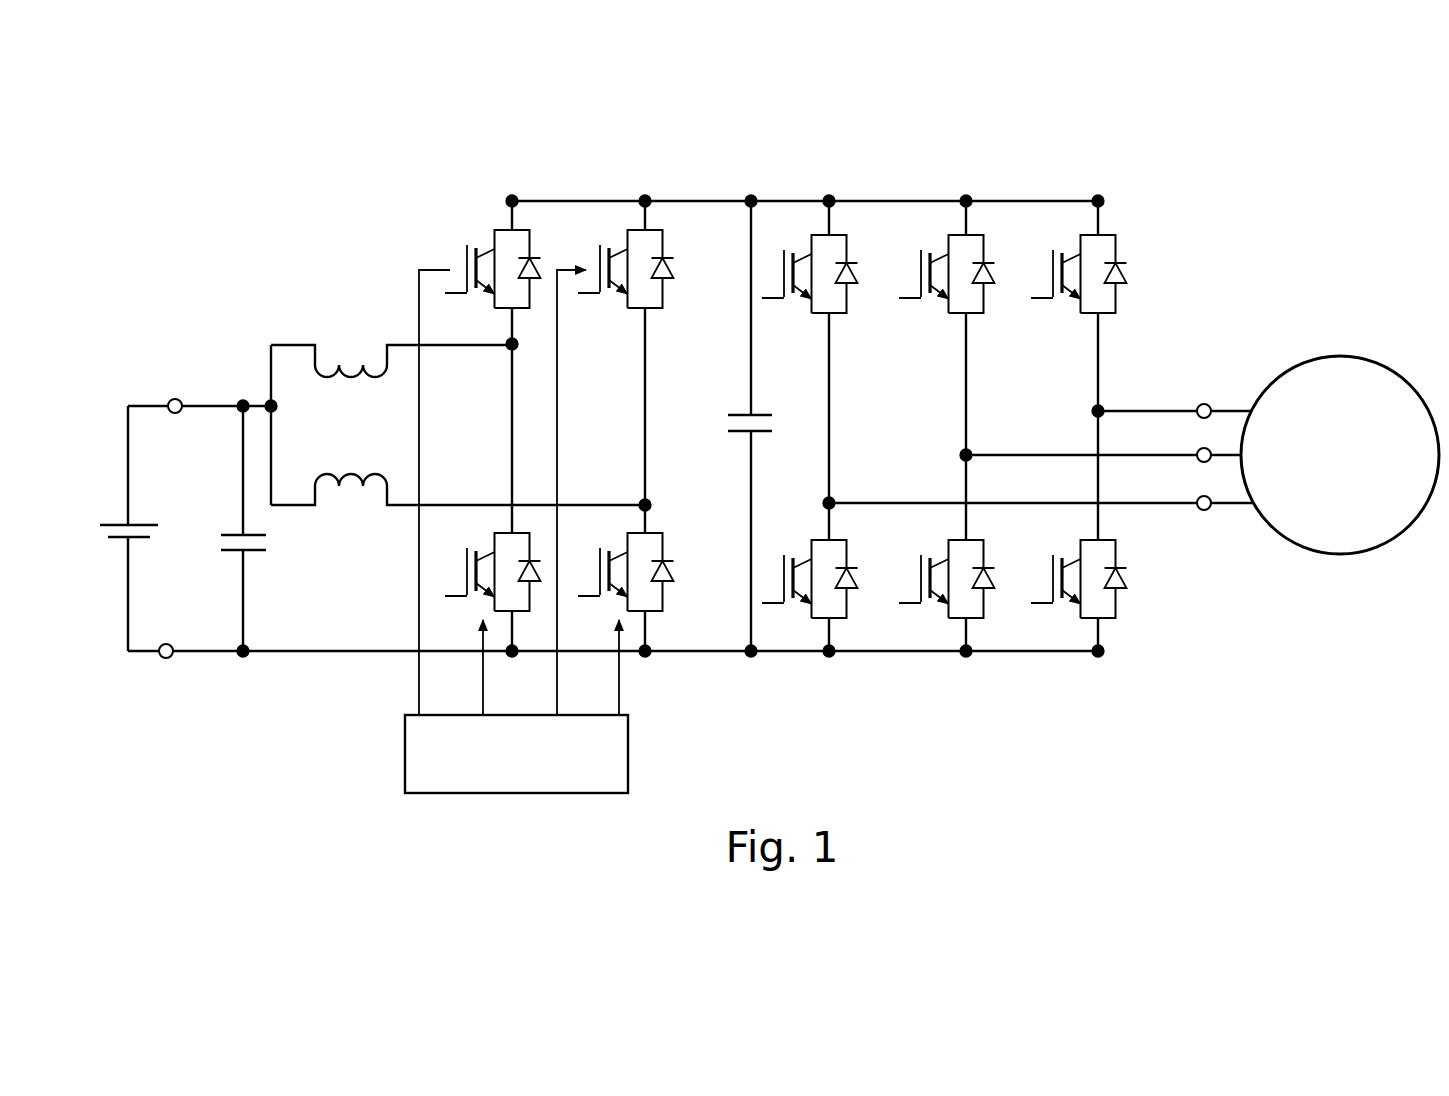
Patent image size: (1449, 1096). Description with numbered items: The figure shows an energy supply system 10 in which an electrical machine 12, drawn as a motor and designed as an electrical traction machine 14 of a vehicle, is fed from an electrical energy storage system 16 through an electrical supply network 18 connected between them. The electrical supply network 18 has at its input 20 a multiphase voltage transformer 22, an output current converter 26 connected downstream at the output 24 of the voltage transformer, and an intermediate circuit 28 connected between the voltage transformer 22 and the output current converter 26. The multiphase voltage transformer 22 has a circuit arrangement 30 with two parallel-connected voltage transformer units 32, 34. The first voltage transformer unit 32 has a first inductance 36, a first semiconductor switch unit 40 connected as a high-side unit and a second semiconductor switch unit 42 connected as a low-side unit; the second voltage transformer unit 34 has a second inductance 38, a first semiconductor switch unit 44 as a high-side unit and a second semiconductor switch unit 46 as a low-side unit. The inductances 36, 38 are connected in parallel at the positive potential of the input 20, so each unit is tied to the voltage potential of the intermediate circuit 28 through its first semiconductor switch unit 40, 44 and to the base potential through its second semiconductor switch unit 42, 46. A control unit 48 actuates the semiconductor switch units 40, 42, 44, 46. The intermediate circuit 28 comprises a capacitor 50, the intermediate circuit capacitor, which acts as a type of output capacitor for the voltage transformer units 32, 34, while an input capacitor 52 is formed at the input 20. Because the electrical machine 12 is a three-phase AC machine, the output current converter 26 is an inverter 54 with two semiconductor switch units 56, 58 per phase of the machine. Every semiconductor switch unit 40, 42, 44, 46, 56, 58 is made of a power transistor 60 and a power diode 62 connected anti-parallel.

The energy supply system 10 is at (1323, 272).
The electrical machine 12 is at (1340, 505).
The electrical traction machine 14 is at (1330, 555).
The electrical energy storage system 16 is at (123, 523).
The electrical supply network 18 is at (235, 173).
The input 20 is at (165, 663).
The multiphase voltage transformer 22 is at (218, 142).
The output 24 is at (1205, 380).
The output current converter 26 is at (1001, 396).
The intermediate circuit 28 is at (797, 142).
The circuit arrangement 30 is at (340, 663).
The first voltage transformer unit 32 is at (257, 342).
The second voltage transformer unit 34 is at (260, 500).
The inductance 36 is at (360, 378).
The inductance 38 is at (342, 473).
The first semiconductor switch unit 40 is at (523, 222).
The second semiconductor switch unit 42 is at (457, 568).
The first semiconductor switch unit 44 is at (657, 221).
The second semiconductor switch unit 46 is at (673, 627).
The control unit 48 is at (628, 753).
The capacitor 50 is at (767, 413).
The input capacitor 52 is at (228, 553).
The inverter 54 is at (1205, 142).
The semiconductor switch unit 56 is at (843, 222).
The semiconductor switch unit 58 is at (860, 628).
The power transistor 60 is at (467, 250).
The power diode 62 is at (543, 262).